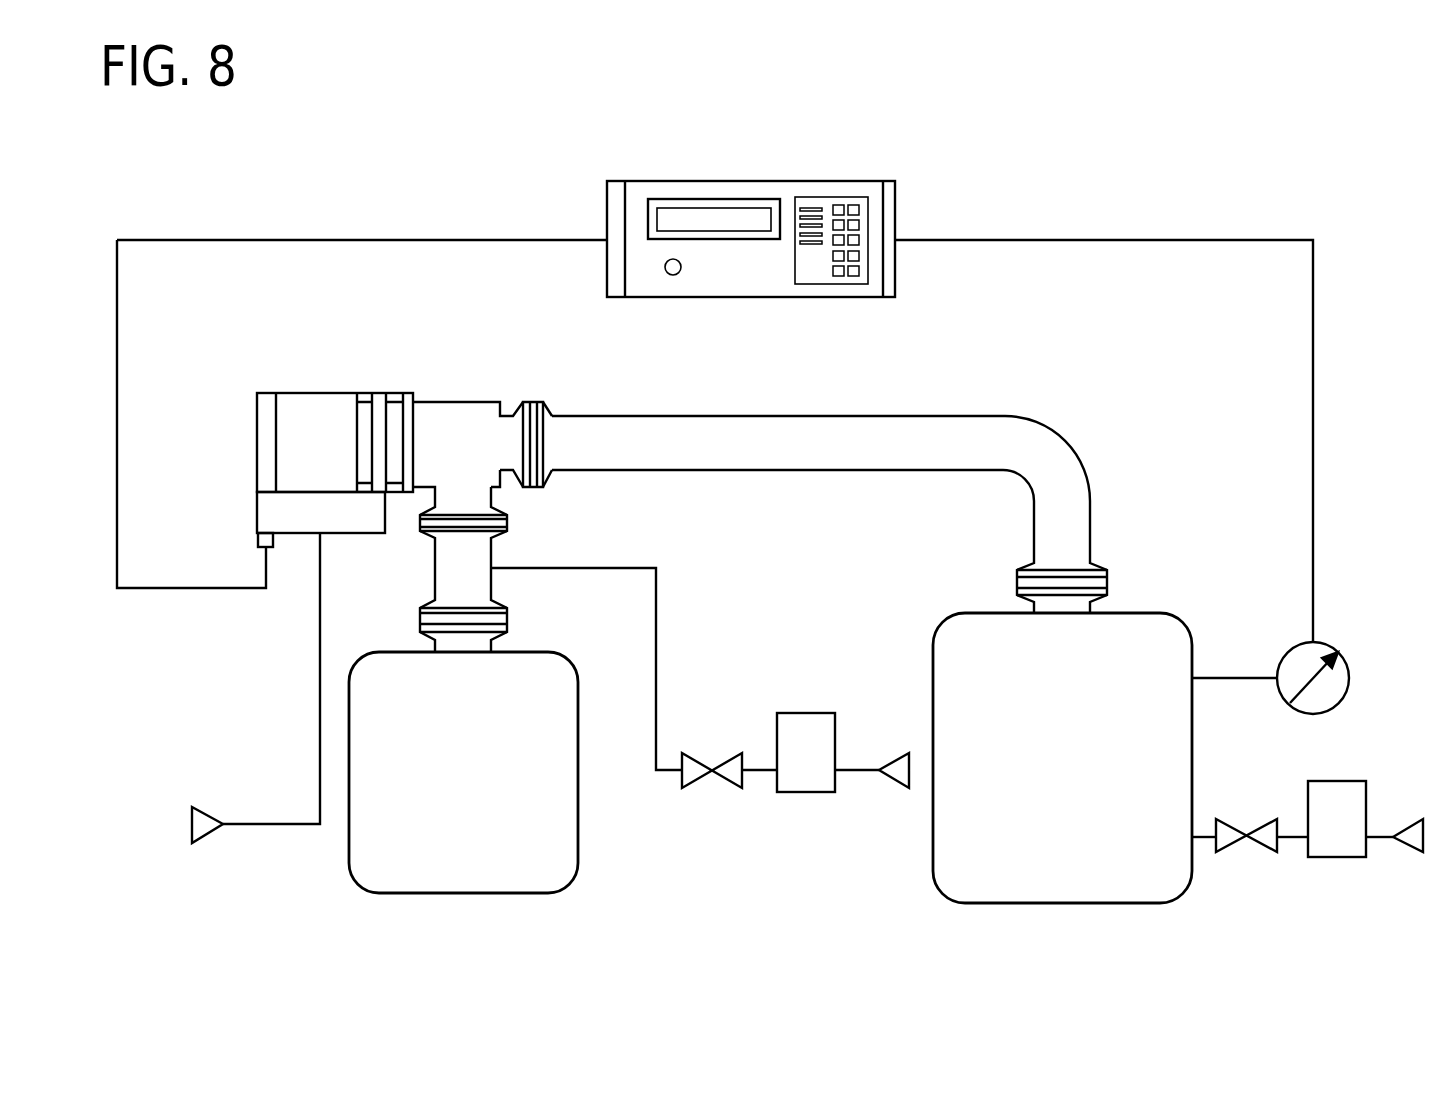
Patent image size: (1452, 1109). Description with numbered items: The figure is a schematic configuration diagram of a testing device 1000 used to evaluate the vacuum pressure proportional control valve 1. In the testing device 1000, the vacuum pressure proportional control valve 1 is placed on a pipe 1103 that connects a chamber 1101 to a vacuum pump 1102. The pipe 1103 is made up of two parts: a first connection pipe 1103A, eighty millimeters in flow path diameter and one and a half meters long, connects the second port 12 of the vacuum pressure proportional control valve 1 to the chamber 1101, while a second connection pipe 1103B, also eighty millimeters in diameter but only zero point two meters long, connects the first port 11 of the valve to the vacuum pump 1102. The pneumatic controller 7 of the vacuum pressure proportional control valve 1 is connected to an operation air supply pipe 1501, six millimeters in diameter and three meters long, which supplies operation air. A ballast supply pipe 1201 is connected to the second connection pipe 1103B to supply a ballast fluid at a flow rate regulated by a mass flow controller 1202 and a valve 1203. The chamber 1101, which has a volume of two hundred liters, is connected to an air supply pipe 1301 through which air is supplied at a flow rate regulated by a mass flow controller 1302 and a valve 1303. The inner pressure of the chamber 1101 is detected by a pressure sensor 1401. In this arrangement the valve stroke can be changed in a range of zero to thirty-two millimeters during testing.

The testing device 1000 is at (231, 183).
The vacuum pressure proportional control valve 1 is at (322, 393).
The pneumatic controller 7 is at (257, 515).
The first port 11 is at (453, 522).
The second port 12 is at (537, 443).
The chamber 1101 is at (933, 665).
The vacuum pump 1102 is at (476, 889).
The pipe 1103 is at (737, 490).
The first connection pipe 1103A is at (830, 471).
The second connection pipe 1103B is at (492, 588).
The ballast supply pipe 1201 is at (566, 568).
The mass flow controller 1202 is at (812, 794).
The valve 1203 is at (700, 790).
The air supply pipe 1301 is at (1395, 837).
The mass flow controller 1302 is at (1340, 859).
The valve 1303 is at (1226, 855).
The pressure sensor 1401 is at (1326, 644).
The operation air supply pipe 1501 is at (263, 826).